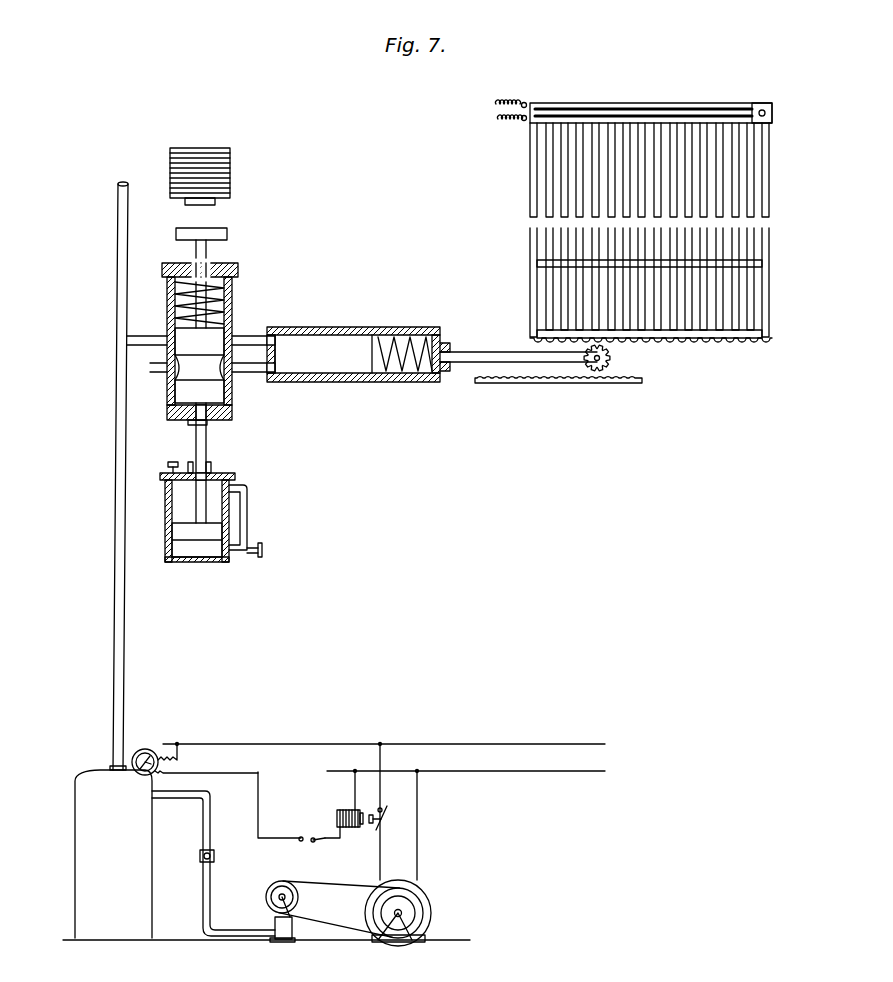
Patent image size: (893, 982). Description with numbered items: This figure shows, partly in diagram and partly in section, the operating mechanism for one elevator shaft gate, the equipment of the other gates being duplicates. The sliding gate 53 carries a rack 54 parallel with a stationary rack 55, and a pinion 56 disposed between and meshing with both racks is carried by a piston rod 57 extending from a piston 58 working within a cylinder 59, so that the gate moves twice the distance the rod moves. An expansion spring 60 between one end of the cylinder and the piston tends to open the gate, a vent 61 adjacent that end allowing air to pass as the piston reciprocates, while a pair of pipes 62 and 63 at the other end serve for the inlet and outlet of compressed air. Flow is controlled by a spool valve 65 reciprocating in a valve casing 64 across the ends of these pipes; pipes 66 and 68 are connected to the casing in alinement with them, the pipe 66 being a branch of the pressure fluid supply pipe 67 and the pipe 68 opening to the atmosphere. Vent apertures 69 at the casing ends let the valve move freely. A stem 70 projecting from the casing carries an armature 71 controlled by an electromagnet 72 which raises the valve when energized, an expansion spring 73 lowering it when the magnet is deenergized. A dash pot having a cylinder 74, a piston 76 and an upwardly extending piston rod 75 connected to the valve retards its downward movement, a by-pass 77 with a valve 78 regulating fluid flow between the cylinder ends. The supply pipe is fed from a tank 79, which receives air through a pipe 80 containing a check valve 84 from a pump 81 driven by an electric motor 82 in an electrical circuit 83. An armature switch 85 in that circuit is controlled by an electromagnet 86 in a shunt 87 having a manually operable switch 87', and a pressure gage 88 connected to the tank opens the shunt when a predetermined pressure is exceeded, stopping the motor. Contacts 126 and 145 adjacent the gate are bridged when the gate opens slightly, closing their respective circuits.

The sliding gate 53 is at (534, 256).
The rack 54 is at (708, 344).
The stationary rack 55 is at (548, 383).
The pinion 56 is at (610, 360).
The piston rod 57 is at (465, 367).
The piston 58 is at (372, 350).
The cylinder 59 is at (333, 382).
The expansion spring 60 is at (422, 373).
The vent 61 is at (437, 336).
The pipe 62 is at (244, 336).
The pipe 63 is at (254, 372).
The valve casing 64 is at (232, 300).
The spool valve 65 is at (178, 403).
The pipe 66 is at (130, 338).
The pressure fluid supply pipe 67 is at (118, 250).
The pipe 68 is at (156, 375).
The vent apertures 69 is at (228, 266).
The stem 70 is at (196, 248).
The armature 71 is at (227, 234).
The electromagnet 72 is at (230, 175).
The expansion spring 73 is at (175, 294).
The dash pot cylinder 74 is at (165, 513).
The piston rod 75 is at (196, 442).
The piston 76 is at (200, 535).
The by-pass 77 is at (247, 513).
The valve 78 is at (262, 551).
The tank 79 is at (75, 828).
The pipe 80 is at (210, 897).
The pump 81 is at (292, 930).
The electric motor 82 is at (431, 920).
The electrical circuit 83 is at (493, 771).
The check valve 84 is at (214, 856).
The armature switch 85 is at (384, 819).
The electromagnet 86 is at (337, 812).
The shunt 87 is at (279, 805).
The manually operable switch 87' is at (323, 852).
The pressure gage 88 is at (144, 749).
The contact 126 is at (521, 125).
The contact 145 is at (524, 102).